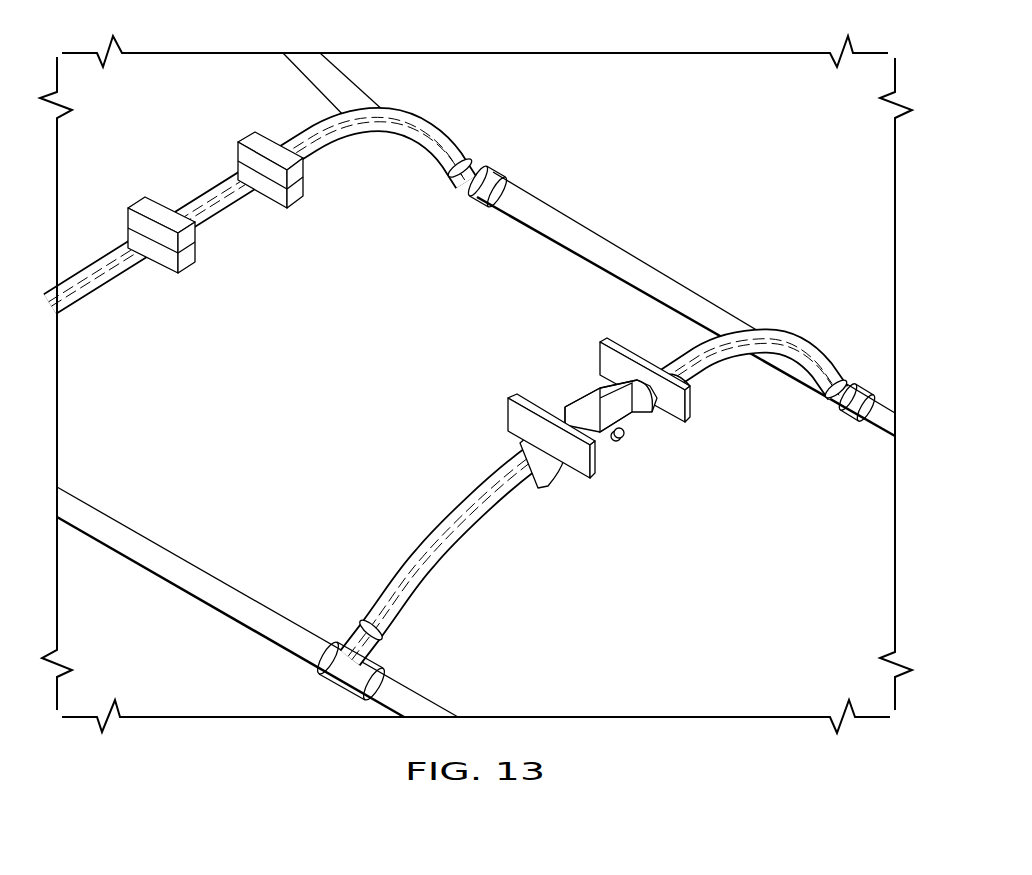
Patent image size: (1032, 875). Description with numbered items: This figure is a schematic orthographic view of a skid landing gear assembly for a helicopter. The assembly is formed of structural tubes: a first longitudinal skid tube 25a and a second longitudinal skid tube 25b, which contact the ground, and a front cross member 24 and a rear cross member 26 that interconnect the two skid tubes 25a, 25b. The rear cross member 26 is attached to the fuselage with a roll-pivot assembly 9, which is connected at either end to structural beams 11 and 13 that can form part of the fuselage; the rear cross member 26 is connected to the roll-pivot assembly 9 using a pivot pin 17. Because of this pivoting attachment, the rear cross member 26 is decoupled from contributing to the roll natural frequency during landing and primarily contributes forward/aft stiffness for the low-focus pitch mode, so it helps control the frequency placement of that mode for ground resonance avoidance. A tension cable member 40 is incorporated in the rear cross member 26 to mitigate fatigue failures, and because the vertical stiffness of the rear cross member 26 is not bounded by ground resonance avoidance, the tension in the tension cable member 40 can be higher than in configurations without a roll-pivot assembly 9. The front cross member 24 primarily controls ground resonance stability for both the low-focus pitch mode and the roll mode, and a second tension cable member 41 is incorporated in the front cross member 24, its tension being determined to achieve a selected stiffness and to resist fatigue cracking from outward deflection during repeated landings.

The roll-pivot assembly 9 is at (597, 413).
The structural beam 11 is at (690, 400).
The structural beam 13 is at (506, 410).
The pivot pin 17 is at (617, 442).
The front cross member 24 is at (210, 182).
The first longitudinal skid tube 25a is at (193, 563).
The second longitudinal skid tube 25b is at (628, 250).
The rear cross member 26 is at (464, 484).
The tension cable member 40 is at (797, 342).
The second tension cable member 41 is at (124, 253).